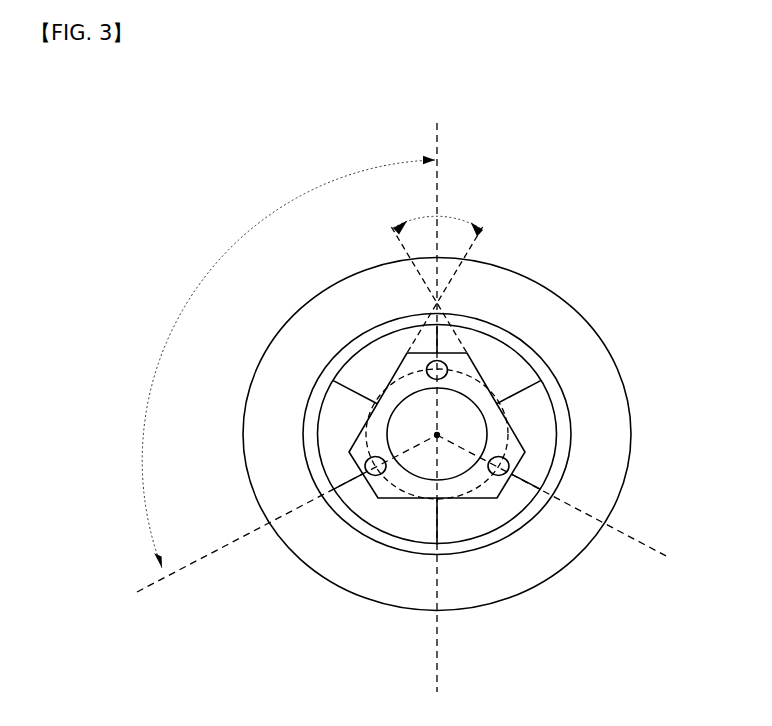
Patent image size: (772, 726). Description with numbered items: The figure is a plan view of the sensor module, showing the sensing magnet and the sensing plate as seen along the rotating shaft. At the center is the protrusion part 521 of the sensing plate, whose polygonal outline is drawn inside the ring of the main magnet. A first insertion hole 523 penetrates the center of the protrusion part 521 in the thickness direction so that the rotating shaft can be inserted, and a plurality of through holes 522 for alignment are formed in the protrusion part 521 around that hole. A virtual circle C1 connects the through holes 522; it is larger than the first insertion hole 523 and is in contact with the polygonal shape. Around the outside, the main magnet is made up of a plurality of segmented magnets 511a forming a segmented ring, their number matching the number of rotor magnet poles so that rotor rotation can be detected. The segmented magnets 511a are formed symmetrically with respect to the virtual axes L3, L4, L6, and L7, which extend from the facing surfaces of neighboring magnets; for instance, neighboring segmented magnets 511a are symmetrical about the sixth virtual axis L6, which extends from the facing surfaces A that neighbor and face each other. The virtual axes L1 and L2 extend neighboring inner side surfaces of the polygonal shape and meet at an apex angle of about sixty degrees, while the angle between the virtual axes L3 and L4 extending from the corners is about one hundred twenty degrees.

The segmented magnets 511a is at (350, 367).
The protrusion part 521 is at (447, 370).
The through holes 522 is at (377, 497).
The first insertion hole 523 is at (312, 455).
The facing surfaces A is at (445, 527).
The virtual circle C1 is at (575, 472).
The virtual axis L1 is at (419, 275).
The virtual axis L2 is at (453, 275).
The virtual axis L3 is at (436, 398).
The virtual axis L4 is at (277, 519).
The sixth virtual axis L6 is at (436, 704).
The virtual axis L7 is at (566, 503).